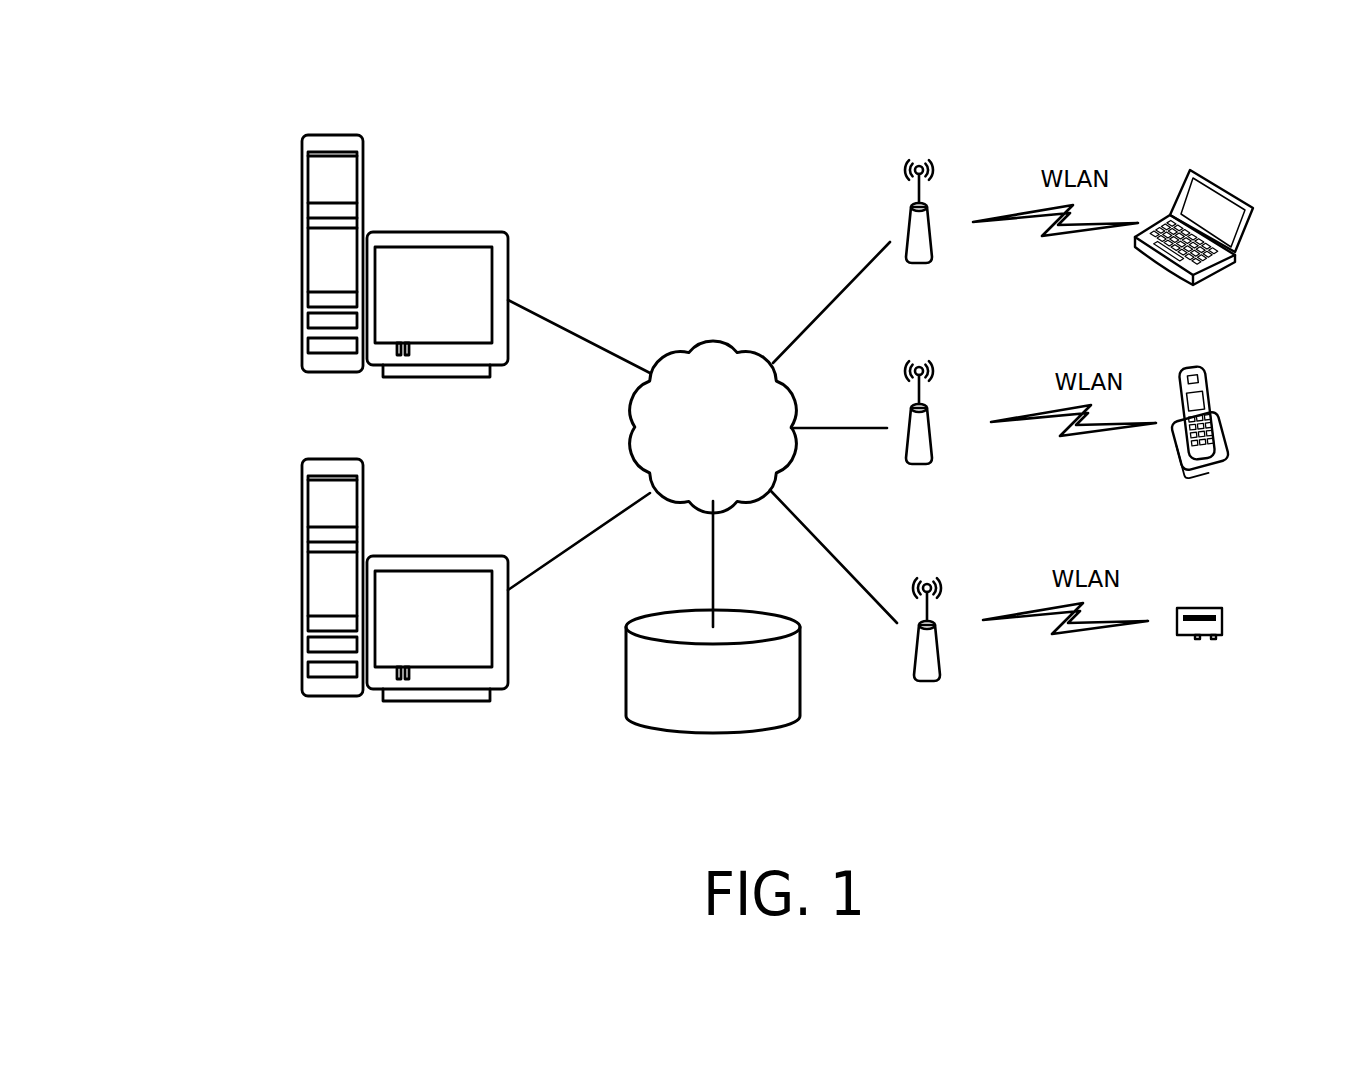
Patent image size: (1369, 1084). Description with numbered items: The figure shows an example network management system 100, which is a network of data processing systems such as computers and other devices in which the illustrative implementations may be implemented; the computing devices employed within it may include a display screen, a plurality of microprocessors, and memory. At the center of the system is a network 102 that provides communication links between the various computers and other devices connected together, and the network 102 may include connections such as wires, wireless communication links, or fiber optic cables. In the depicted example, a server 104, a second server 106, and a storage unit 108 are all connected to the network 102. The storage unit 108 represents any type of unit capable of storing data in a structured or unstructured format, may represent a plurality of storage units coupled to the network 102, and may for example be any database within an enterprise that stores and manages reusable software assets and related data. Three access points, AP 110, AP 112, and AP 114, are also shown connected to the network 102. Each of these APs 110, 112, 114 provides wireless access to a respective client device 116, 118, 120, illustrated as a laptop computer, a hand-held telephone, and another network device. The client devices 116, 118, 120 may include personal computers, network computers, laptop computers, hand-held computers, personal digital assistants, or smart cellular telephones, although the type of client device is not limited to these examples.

The network management system 100 is at (148, 136).
The network 102 is at (712, 344).
The server 104 is at (304, 236).
The server 106 is at (304, 560).
The storage unit 108 is at (727, 609).
The AP 110 is at (928, 264).
The AP 112 is at (928, 465).
The AP 114 is at (936, 683).
The client device 116 is at (1235, 260).
The client device 118 is at (1220, 463).
The client device 120 is at (1218, 627).